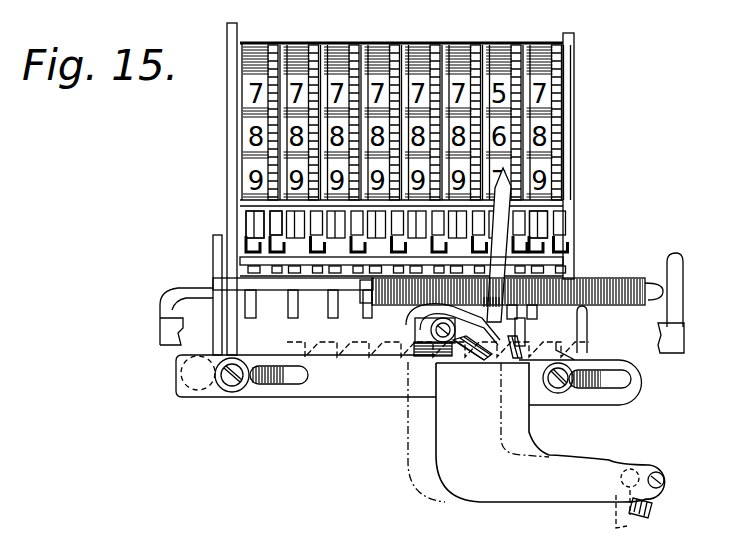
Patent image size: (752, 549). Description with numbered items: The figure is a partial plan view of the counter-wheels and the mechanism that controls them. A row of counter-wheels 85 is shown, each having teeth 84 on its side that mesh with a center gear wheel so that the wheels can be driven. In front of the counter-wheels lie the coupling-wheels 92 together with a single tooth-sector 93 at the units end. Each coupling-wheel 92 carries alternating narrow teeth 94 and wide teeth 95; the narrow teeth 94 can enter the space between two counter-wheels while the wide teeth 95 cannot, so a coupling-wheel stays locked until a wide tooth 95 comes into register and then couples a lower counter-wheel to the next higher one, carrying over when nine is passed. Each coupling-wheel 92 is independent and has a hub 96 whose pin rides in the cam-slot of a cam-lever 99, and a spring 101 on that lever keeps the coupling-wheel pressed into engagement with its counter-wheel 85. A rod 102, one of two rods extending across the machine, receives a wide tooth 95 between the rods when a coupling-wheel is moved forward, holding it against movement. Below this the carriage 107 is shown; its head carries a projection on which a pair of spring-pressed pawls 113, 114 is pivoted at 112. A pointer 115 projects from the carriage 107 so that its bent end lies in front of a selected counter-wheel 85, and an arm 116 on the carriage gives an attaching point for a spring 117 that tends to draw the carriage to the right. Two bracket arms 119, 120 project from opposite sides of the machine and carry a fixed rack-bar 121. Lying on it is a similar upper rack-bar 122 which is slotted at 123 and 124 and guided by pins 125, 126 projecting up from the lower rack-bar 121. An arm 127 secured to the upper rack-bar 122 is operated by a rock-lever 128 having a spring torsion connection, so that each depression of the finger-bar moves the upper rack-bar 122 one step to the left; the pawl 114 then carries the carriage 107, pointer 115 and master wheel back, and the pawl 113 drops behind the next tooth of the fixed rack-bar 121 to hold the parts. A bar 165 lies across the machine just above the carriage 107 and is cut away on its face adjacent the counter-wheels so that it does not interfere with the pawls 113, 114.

The teeth 84 is at (318, 43).
The counter-wheel 85 is at (385, 43).
The coupling-wheel 92 is at (273, 227).
The single tooth-sector 93 is at (557, 222).
The narrow teeth 94 is at (250, 248).
The wide teeth 95 is at (282, 255).
The hub 96 is at (330, 237).
The cam-lever 99 is at (243, 256).
The spring 101 is at (213, 280).
The rod 102 is at (548, 259).
The carriage 107 is at (525, 328).
The pivot 112 is at (444, 338).
The pawl 113 is at (518, 347).
The pawl 114 is at (496, 330).
The pointer 115 is at (514, 186).
The arm 116 is at (397, 312).
The spring 117 is at (602, 306).
The bracket arm 119 is at (222, 337).
The bracket arm 120 is at (578, 364).
The rack-bar 121 is at (197, 388).
The upper rack-bar 122 is at (354, 397).
The slot 123 is at (293, 385).
The slot 124 is at (629, 389).
The pin 125 is at (232, 393).
The pin 126 is at (558, 394).
The arm 127 is at (503, 488).
The rock-lever 128 is at (646, 508).
The bar 165 is at (160, 334).